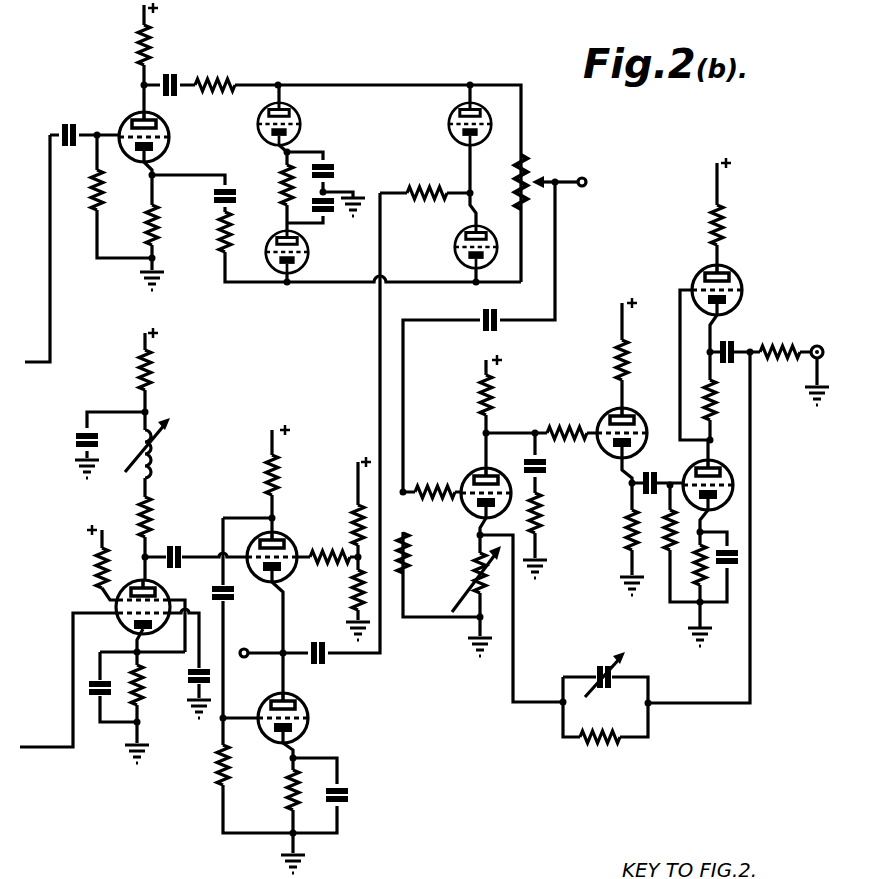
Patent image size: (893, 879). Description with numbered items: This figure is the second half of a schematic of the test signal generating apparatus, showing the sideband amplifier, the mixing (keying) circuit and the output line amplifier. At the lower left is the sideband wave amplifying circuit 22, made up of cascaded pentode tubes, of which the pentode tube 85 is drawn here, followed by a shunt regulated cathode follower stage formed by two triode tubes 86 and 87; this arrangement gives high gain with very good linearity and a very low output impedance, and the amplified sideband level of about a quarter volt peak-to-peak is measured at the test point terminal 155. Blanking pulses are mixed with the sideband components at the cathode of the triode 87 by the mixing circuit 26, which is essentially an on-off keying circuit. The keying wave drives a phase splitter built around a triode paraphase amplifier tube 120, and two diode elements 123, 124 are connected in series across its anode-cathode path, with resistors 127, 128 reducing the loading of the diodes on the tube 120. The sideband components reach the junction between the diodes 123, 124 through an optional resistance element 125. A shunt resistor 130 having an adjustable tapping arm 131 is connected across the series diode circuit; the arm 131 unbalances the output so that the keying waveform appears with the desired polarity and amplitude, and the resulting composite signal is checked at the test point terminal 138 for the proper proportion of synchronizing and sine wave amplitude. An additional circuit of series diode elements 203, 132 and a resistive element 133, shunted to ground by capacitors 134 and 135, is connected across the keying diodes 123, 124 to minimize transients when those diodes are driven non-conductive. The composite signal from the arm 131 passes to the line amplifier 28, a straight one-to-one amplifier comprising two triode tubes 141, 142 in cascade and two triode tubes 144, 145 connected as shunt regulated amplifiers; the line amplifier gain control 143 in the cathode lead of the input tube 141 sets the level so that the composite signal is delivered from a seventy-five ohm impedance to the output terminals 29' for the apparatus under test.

The triode paraphase amplifier tube 120 is at (179, 116).
The resistor 127 is at (228, 83).
The mixing circuit 26 is at (364, 66).
The diode element 203 is at (300, 106).
The diode element 123 is at (450, 126).
The diode element 124 is at (457, 259).
The resistance element 125 is at (446, 186).
The resistor 128 is at (221, 238).
The shunt resistor 130 is at (519, 179).
The adjustable tapping arm 131 is at (547, 180).
The diode element 132 is at (306, 257).
The resistive element 133 is at (283, 178).
The capacitor 134 is at (331, 170).
The capacitor 135 is at (331, 214).
The test point terminal 138 is at (587, 183).
The triode tube 141 is at (465, 482).
The triode tube 142 is at (614, 458).
The line amplifier gain control 143 is at (471, 575).
The triode tube 144 is at (735, 476).
The triode tube 145 is at (755, 266).
The line amplifier 28 is at (598, 383).
The output terminals 29' is at (799, 355).
The sideband wave amplifying circuit 22 is at (203, 500).
The pentode tube 85 is at (127, 624).
The triode tube 86 is at (316, 702).
The triode tube 87 is at (290, 537).
The test point terminal 155 is at (252, 639).